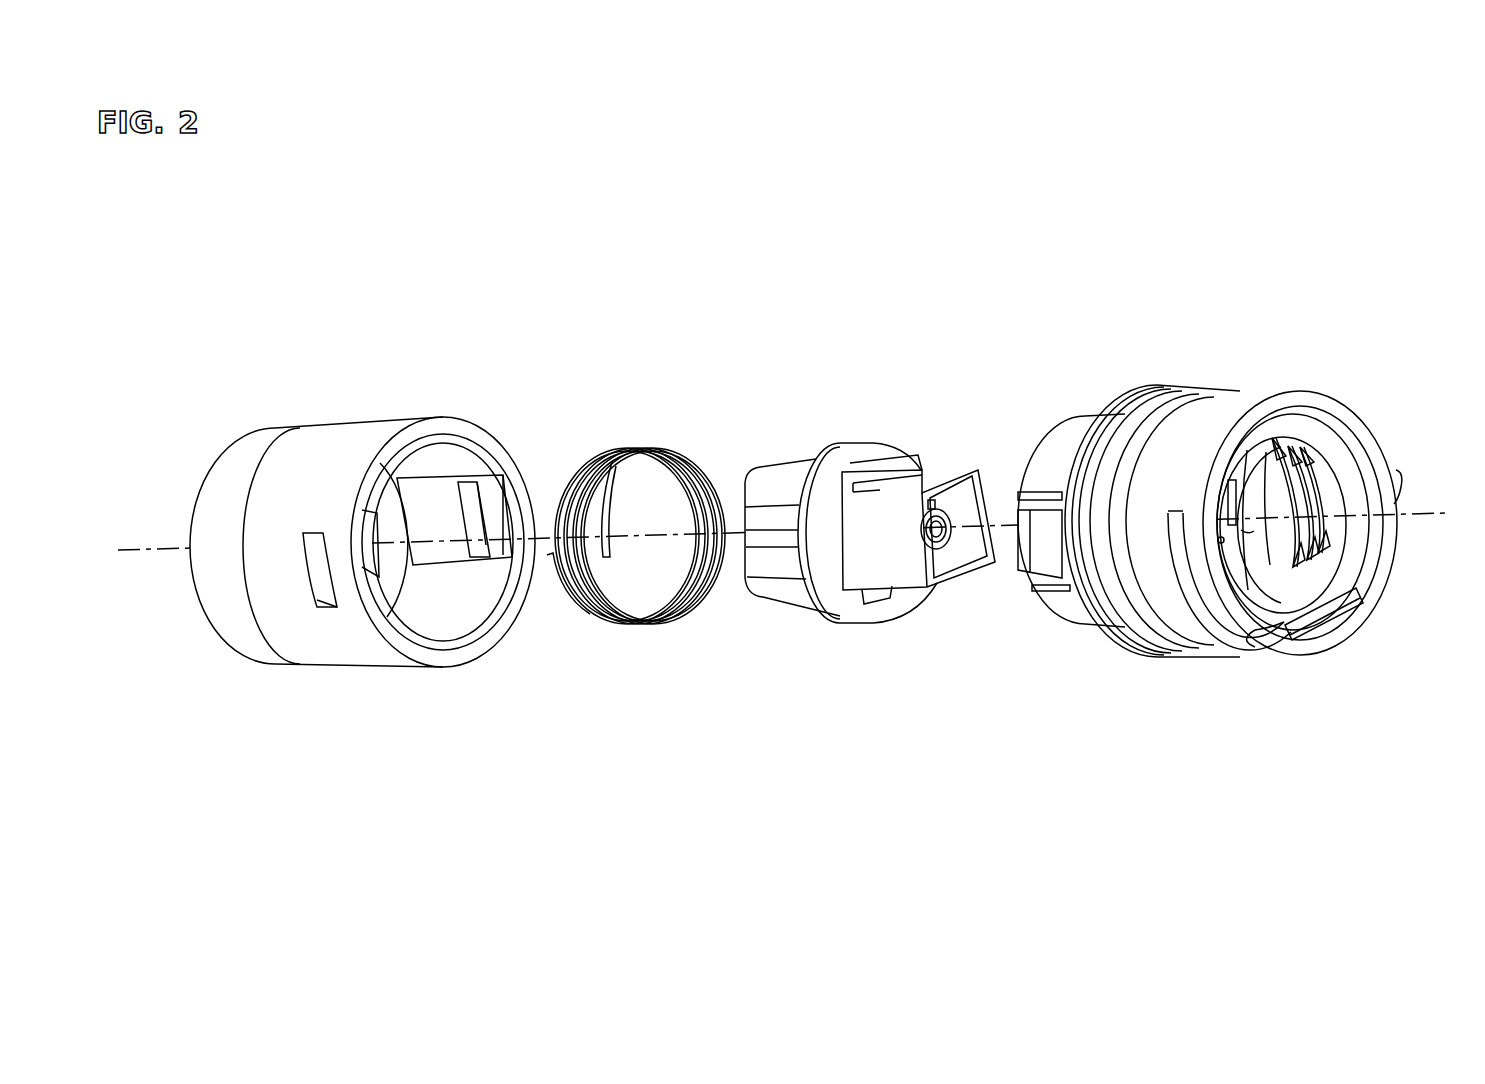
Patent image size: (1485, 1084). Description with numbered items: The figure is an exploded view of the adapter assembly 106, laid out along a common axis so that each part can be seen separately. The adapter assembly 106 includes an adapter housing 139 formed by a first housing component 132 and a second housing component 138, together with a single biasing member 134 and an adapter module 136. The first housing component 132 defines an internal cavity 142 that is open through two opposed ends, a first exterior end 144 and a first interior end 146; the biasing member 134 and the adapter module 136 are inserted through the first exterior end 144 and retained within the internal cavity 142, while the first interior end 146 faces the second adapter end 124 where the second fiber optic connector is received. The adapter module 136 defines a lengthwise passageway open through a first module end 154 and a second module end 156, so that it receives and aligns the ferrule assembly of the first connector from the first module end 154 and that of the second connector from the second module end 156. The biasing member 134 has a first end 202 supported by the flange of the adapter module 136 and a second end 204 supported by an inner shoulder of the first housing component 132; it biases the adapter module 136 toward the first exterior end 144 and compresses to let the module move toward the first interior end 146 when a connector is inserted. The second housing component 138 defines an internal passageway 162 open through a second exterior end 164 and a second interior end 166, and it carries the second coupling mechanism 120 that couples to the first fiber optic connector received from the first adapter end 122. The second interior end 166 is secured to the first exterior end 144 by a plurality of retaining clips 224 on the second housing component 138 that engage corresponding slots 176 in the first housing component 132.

The adapter assembly 106 is at (288, 302).
The adapter housing 139 is at (393, 282).
The first housing component 132 is at (363, 375).
The second adapter end 124 is at (190, 388).
The first interior end 146 is at (196, 485).
The first exterior end 144 is at (501, 440).
The internal cavity 142 is at (421, 512).
The slots 176 is at (317, 575).
The single biasing member 134 is at (636, 423).
The second end 204 is at (580, 462).
The first end 202 is at (687, 450).
The adapter module 136 is at (856, 394).
The second module end 156 is at (771, 462).
The first module end 154 is at (978, 455).
The second interior end 166 is at (1048, 428).
The retaining clips 224 is at (1052, 550).
The second housing component 138 is at (1151, 360).
The first adapter end 122 is at (1326, 380).
The second exterior end 164 is at (1346, 415).
The internal passageway 162 is at (1243, 532).
The second coupling mechanism 120 is at (1268, 663).